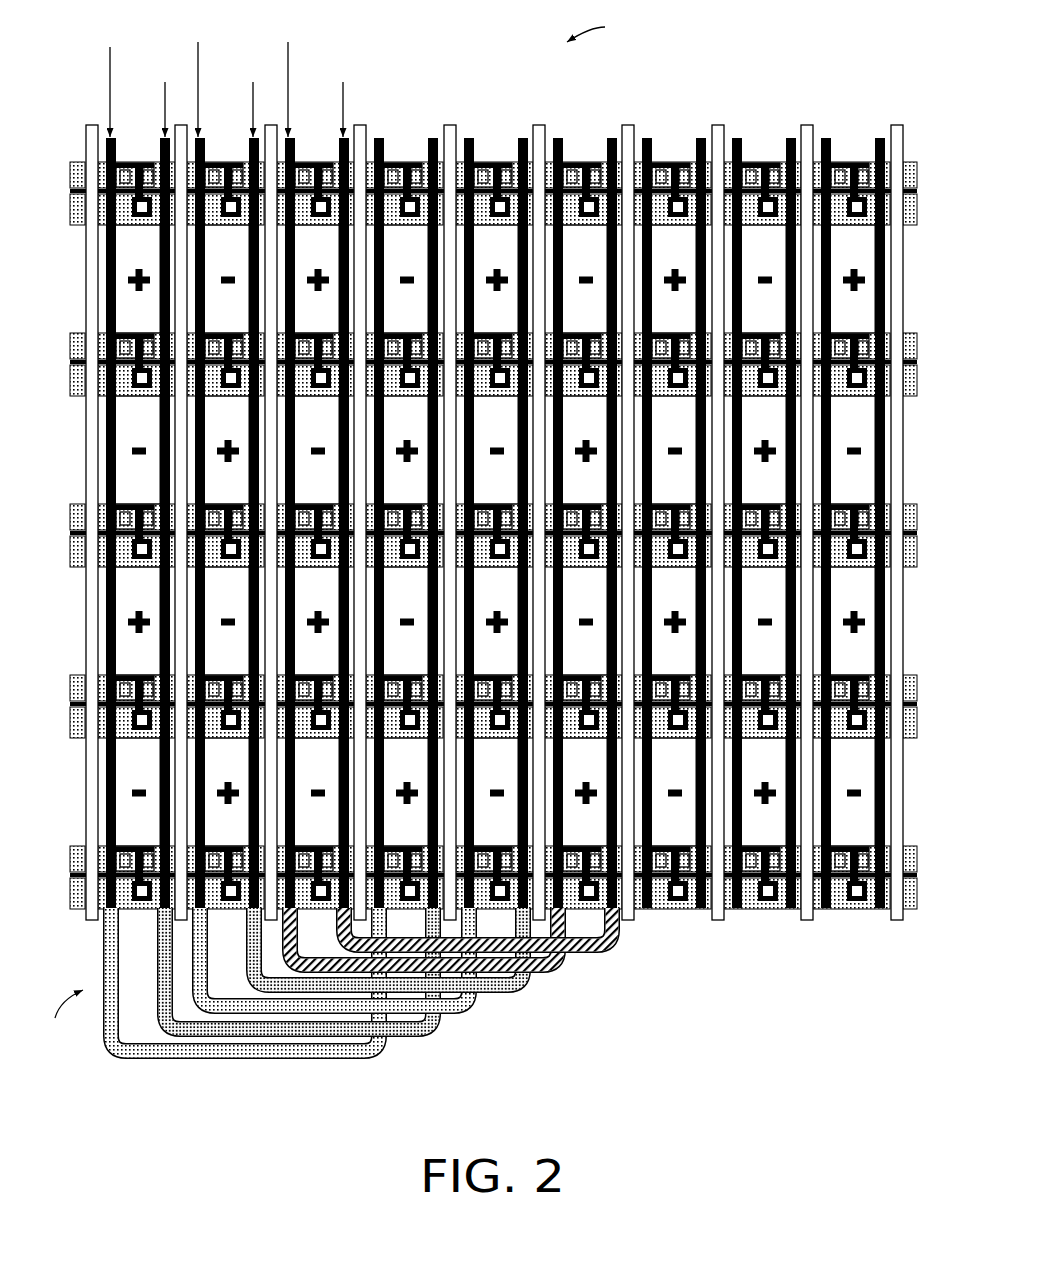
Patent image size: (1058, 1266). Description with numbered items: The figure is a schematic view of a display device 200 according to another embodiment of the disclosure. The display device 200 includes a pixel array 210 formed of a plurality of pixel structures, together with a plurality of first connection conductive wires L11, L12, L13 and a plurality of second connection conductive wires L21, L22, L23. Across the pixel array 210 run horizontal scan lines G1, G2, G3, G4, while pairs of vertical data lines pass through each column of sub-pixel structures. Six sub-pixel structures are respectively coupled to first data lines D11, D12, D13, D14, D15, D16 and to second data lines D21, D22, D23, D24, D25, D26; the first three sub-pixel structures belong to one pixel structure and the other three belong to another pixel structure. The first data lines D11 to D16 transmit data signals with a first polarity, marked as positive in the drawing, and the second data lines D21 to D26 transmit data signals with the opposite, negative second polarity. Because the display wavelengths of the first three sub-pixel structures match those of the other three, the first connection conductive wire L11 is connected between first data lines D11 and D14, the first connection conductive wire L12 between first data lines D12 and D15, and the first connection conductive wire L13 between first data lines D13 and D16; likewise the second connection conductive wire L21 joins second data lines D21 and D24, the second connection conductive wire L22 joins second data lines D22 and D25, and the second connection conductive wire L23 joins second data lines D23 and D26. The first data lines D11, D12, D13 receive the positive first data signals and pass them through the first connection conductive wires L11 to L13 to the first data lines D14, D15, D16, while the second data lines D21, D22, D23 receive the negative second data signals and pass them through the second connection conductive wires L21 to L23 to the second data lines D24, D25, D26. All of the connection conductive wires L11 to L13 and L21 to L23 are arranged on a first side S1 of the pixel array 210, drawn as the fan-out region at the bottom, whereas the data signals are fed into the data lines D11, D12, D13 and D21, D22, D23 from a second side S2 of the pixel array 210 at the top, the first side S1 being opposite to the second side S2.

The display device 200 is at (884, 1072).
The pixel array 210 is at (912, 265).
The first scan line G1 is at (481, 195).
The second scan line G2 is at (481, 366).
The third scan line G3 is at (481, 537).
The fourth scan line G4 is at (481, 708).
The first data line D11 is at (115, 137).
The first data line D12 is at (204, 137).
The first data line D13 is at (294, 137).
The first data line D14 is at (383, 137).
The first data line D15 is at (473, 137).
The first data line D16 is at (562, 137).
The second data line D21 is at (161, 161).
The second data line D22 is at (250, 161).
The second data line D23 is at (340, 161).
The second data line D24 is at (429, 161).
The second data line D25 is at (519, 161).
The second data line D26 is at (608, 161).
The first connection conductive wire L11 is at (378, 1060).
The second connection conductive wire L21 is at (432, 1040).
The first connection conductive wire L12 is at (468, 1016).
The second connection conductive wire L22 is at (522, 994).
The first connection conductive wire L13 is at (558, 975).
The second connection conductive wire L23 is at (612, 950).
The first side S1 is at (63, 1020).
The second side S2 is at (599, 30).